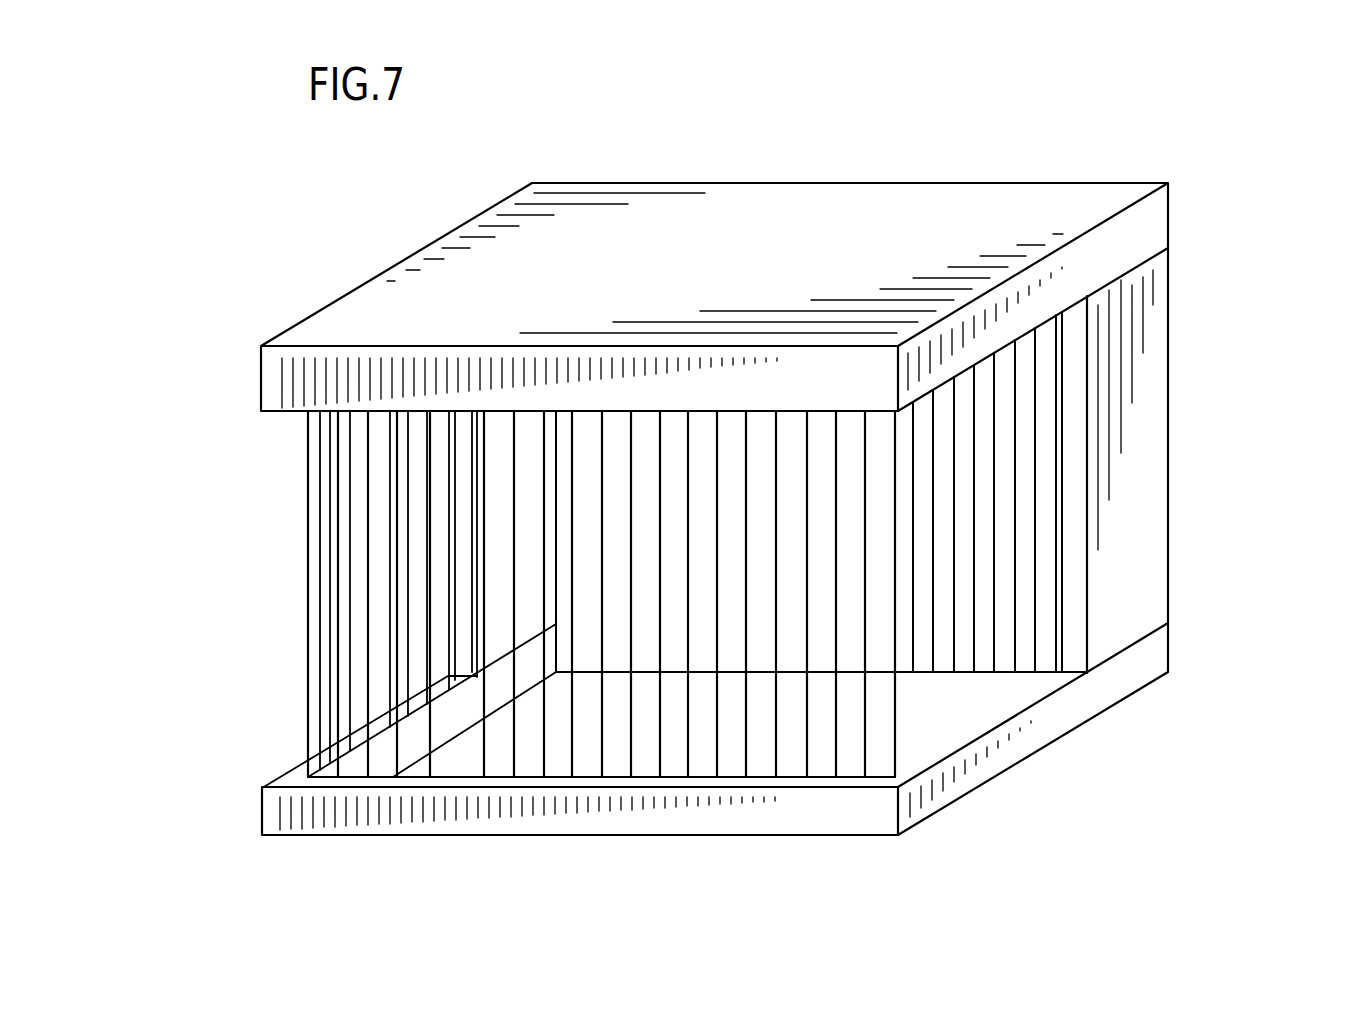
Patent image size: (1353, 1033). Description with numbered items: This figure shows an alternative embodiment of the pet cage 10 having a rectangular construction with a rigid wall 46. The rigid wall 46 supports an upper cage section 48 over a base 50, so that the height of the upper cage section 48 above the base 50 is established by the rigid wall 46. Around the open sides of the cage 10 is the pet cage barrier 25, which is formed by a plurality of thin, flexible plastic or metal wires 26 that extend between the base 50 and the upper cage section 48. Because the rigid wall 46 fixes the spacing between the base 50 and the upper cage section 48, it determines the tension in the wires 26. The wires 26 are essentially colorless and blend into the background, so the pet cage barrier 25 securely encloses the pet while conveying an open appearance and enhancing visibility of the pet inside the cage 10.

The pet cage 10 is at (217, 310).
The pet cage barrier 25 is at (304, 611).
The wires 26 is at (1015, 623).
The rigid wall 46 is at (1155, 483).
The upper cage section 48 is at (1144, 237).
The base 50 is at (1152, 658).